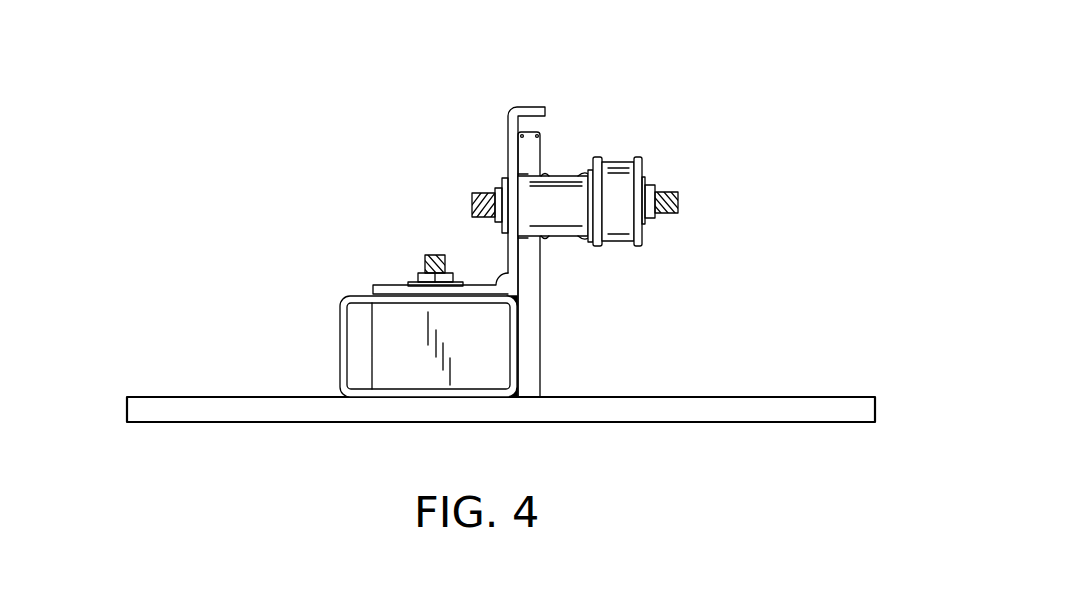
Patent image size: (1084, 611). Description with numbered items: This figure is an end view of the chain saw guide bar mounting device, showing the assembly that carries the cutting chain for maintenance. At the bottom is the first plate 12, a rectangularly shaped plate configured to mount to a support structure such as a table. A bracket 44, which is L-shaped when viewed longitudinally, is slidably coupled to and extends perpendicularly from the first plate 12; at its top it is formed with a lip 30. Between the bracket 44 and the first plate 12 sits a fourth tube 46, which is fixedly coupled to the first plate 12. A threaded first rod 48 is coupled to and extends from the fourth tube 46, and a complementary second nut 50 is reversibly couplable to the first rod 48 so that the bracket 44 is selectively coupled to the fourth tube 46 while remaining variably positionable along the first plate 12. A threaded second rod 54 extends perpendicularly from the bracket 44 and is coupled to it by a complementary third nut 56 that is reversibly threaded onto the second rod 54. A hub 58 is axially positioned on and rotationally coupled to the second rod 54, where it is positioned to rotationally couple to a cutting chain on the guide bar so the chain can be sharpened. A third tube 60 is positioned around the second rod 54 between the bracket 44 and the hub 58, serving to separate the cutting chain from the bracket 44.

The first plate 12 is at (787, 405).
The lip 30 is at (523, 107).
The bracket 44 is at (392, 290).
The fourth tube 46 is at (342, 344).
The first rods 48 is at (425, 257).
The second nuts 50 is at (447, 276).
The second rod 54 is at (668, 198).
The third nut 56 is at (503, 190).
The hub 58 is at (622, 168).
The third tube 60 is at (562, 220).